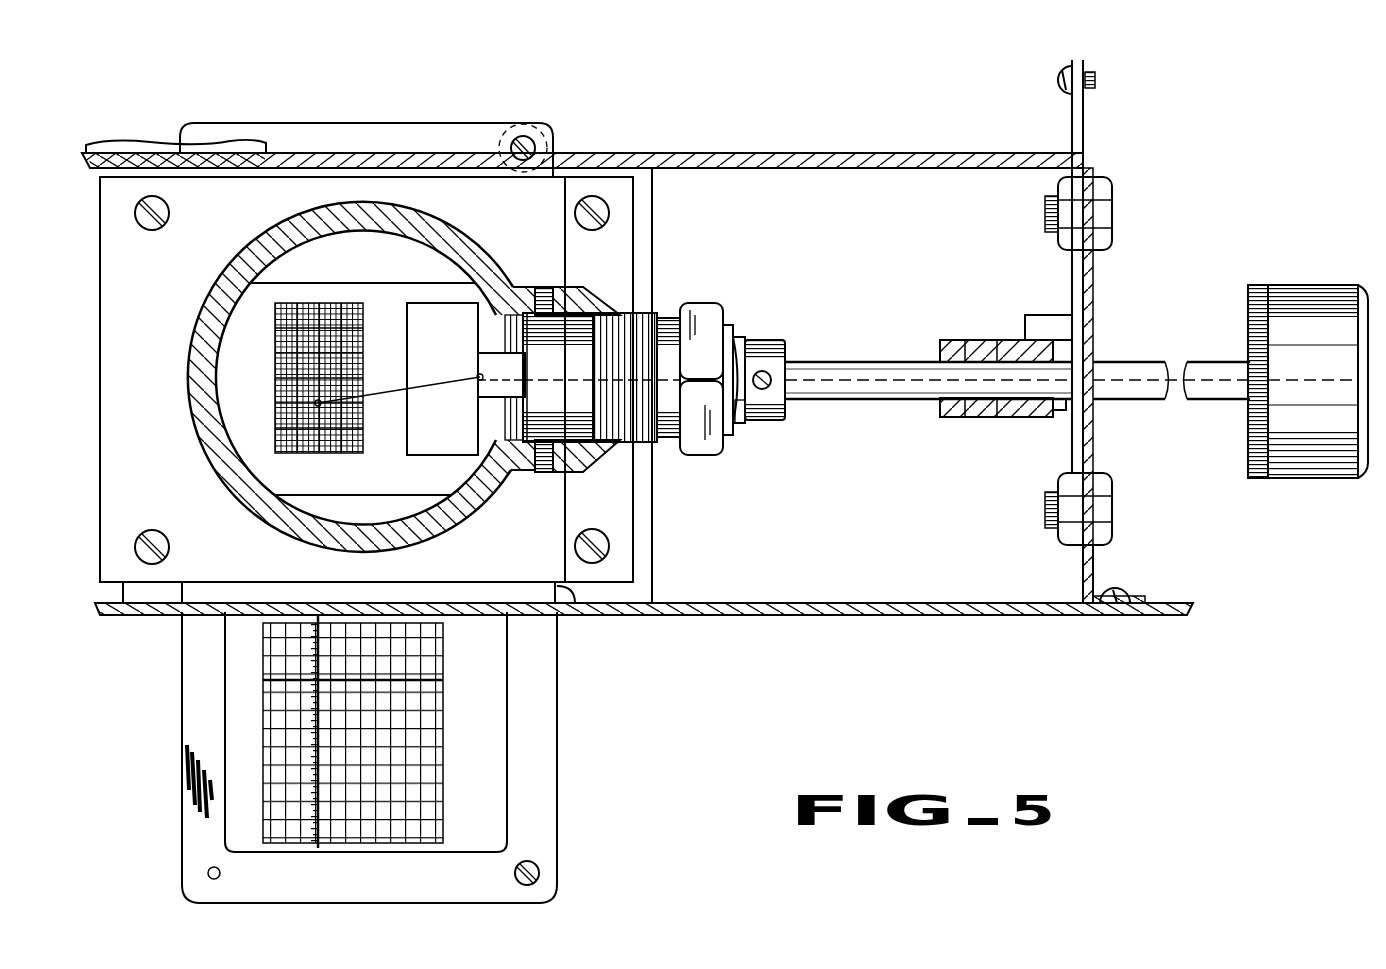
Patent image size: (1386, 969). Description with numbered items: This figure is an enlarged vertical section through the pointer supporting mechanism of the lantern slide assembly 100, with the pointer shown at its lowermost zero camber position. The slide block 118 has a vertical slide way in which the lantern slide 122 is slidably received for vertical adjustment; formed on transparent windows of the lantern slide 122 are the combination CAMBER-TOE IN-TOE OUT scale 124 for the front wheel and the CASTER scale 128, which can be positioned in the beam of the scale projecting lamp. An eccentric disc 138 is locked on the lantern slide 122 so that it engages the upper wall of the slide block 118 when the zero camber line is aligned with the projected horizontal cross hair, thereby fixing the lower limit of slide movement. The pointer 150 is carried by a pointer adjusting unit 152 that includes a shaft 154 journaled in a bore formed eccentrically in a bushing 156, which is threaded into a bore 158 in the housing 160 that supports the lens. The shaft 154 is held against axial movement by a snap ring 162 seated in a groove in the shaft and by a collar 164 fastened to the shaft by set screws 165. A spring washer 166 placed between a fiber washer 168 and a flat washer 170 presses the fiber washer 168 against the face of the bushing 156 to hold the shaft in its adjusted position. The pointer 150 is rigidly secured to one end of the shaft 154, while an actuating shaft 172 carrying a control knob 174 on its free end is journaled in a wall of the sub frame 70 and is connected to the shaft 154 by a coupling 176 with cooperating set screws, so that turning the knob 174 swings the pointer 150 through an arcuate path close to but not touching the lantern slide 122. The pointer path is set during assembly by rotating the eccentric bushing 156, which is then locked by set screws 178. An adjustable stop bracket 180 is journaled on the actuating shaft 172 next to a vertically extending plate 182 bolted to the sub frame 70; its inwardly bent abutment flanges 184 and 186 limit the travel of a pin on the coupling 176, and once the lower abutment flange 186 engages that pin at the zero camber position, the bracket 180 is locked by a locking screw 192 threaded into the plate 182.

The sub frame 70 is at (1094, 557).
The lantern slide assembly 100 is at (574, 727).
The slide block 118 is at (530, 217).
The lantern slide 122 is at (557, 690).
The combination CAMBER-TOE IN-TOE OUT scale 124 is at (316, 308).
The CASTER scale 128 is at (262, 693).
The eccentric disc 138 is at (548, 132).
The pointer 150 is at (399, 410).
The pointer adjusting unit 152 is at (872, 352).
The shaft 154 is at (884, 400).
The bushing 156 is at (695, 305).
The bore 158 is at (590, 320).
The housing 160 is at (300, 220).
The snap ring 162 is at (532, 364).
The collar 164 is at (770, 421).
The set screws 165 is at (770, 374).
The spring washer 166 is at (745, 425).
The fiber washer 168 is at (729, 345).
The flat washer 170 is at (741, 360).
The actuating shaft 172 is at (1196, 361).
The control knob 174 is at (1322, 388).
The coupling 176 is at (991, 343).
The set screws 178 is at (545, 286).
The adjustable stop bracket 180 is at (1072, 122).
The vertically extending plate 182 is at (1083, 122).
The abutment flange 184 is at (1058, 317).
The lower abutment flange 186 is at (1065, 413).
The locking screw 192 is at (1096, 80).